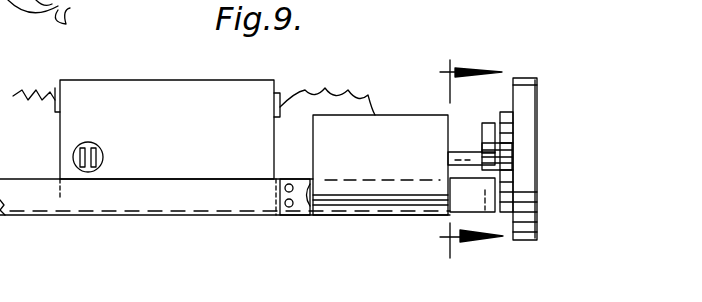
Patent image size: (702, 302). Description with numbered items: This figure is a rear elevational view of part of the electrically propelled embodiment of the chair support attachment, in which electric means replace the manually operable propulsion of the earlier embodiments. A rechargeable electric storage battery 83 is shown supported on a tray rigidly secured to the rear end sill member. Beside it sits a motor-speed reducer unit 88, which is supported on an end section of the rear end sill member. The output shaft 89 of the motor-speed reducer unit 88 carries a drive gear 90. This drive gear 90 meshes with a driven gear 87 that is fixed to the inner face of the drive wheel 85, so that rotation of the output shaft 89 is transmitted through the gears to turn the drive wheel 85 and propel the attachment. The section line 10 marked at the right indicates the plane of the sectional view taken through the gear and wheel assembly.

The section line 10- 10 is at (385, 76).
The rechargeable electric storage battery 83 is at (184, 136).
The drive wheel 85 is at (520, 78).
The gear 87 is at (507, 110).
The motor-speed reducer unit 88 is at (376, 161).
The output shaft 89 is at (458, 152).
The drive gear 90 is at (480, 158).